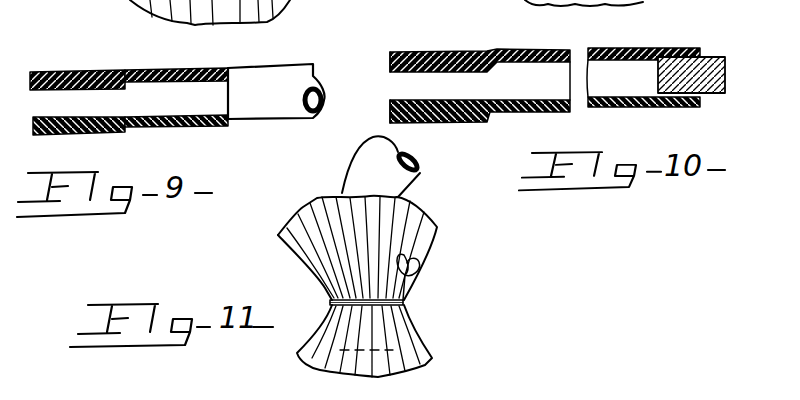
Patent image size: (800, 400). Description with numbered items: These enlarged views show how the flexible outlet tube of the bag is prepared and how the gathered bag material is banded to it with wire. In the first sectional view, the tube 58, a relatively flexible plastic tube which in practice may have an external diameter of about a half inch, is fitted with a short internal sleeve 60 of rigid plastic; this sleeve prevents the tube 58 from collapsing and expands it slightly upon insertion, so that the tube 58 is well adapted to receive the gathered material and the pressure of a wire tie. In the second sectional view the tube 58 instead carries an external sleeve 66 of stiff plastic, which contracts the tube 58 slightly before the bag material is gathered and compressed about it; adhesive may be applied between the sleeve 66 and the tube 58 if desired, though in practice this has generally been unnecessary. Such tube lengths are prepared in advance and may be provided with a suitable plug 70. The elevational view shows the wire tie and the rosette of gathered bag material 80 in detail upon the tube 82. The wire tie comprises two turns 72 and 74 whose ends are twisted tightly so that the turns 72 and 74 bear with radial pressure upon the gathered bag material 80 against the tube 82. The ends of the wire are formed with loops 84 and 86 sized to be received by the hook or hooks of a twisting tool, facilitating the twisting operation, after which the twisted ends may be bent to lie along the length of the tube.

In FIG. 9, the tube 58 is at (172, 68).
In FIG. 10, the tube 58 is at (607, 50).
In FIG. 9, the internal sleeve 60 is at (50, 117).
In FIG. 10, the external sleeve 66 is at (442, 53).
In FIG. 10, the plug 70 is at (707, 50).
In FIG. 11, the turn of wire tie 72 is at (332, 302).
In FIG. 11, the turn of wire tie 74 is at (335, 315).
In FIG. 11, the gathered bag material 80 is at (348, 278).
In FIG. 11, the tube 82 is at (393, 182).
In FIG. 11, the loop 84 is at (410, 255).
In FIG. 11, the loop 86 is at (422, 263).